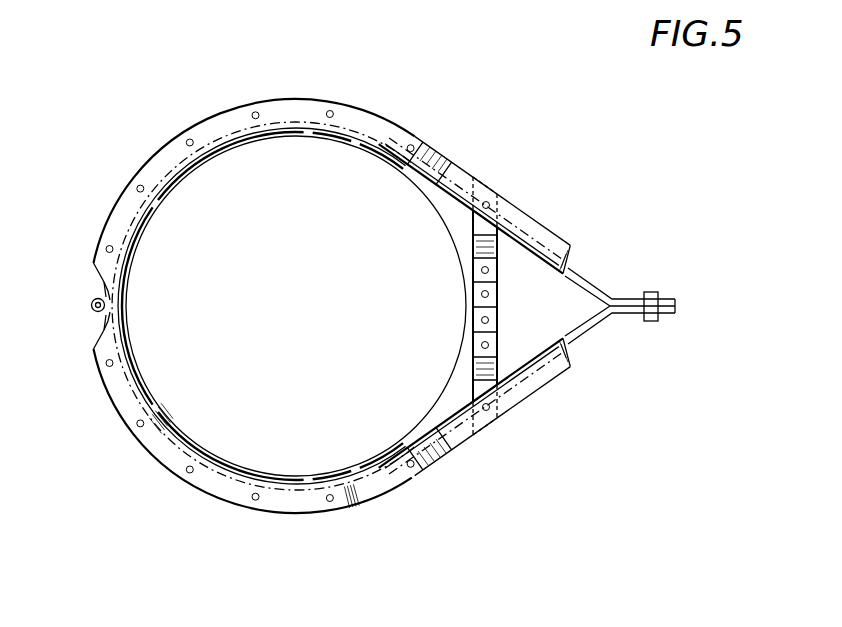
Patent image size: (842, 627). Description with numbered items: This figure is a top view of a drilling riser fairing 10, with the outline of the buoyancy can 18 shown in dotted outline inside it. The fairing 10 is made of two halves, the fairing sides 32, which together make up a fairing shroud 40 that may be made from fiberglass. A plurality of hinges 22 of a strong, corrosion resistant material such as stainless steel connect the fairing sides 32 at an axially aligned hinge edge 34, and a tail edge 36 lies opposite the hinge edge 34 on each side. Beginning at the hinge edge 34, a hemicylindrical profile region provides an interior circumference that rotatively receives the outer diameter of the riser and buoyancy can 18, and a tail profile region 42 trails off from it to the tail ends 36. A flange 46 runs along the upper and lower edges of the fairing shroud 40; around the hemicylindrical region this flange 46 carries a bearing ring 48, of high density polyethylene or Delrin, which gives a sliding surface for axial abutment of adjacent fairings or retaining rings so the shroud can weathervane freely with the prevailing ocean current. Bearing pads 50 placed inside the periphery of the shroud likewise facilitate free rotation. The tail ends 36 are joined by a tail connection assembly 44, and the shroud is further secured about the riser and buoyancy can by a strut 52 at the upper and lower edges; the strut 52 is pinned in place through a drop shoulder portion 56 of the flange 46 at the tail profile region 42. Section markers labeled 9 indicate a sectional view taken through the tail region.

The drilling riser fairing 10 is at (353, 86).
The buoyancy can 18 is at (413, 414).
The hinge 22 is at (90, 298).
The fairing side 32 is at (540, 244).
The hinge edge 34 is at (134, 276).
The tail edge 36 is at (676, 318).
The fairing shroud 40 is at (240, 86).
The tail profile region 42 is at (594, 272).
The tail connection assembly 44 is at (654, 291).
The flange 46 is at (462, 428).
The bearing ring 48 is at (382, 480).
The bearing pad 50 is at (327, 142).
The strut 52 is at (471, 236).
The drop shoulder portion 56 is at (440, 162).
The section line 9- 9 is at (285, 437).